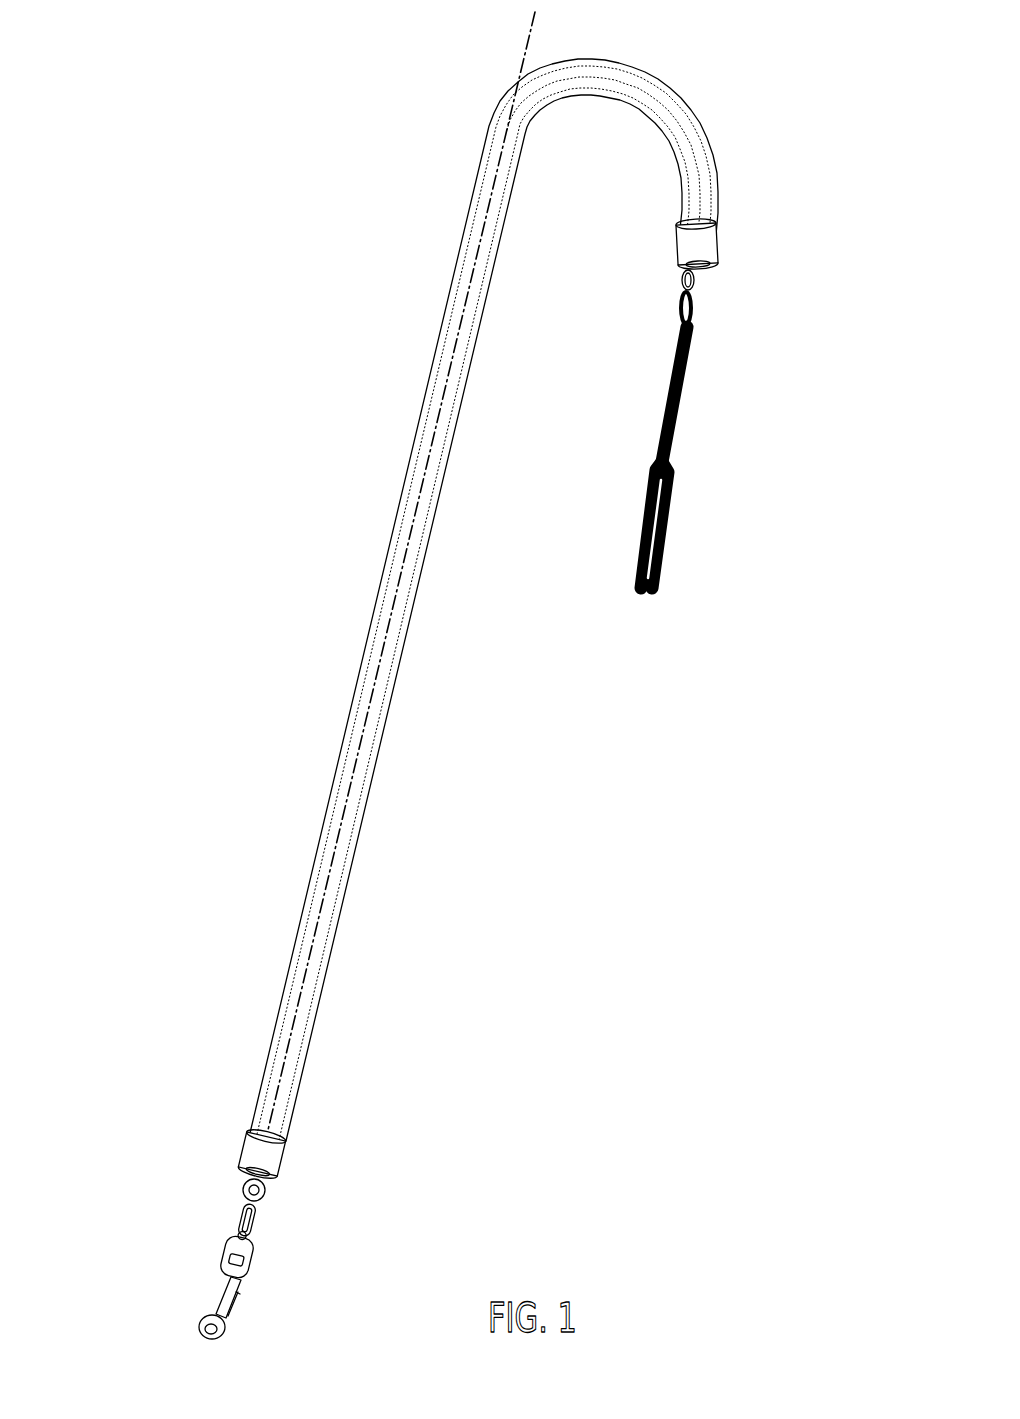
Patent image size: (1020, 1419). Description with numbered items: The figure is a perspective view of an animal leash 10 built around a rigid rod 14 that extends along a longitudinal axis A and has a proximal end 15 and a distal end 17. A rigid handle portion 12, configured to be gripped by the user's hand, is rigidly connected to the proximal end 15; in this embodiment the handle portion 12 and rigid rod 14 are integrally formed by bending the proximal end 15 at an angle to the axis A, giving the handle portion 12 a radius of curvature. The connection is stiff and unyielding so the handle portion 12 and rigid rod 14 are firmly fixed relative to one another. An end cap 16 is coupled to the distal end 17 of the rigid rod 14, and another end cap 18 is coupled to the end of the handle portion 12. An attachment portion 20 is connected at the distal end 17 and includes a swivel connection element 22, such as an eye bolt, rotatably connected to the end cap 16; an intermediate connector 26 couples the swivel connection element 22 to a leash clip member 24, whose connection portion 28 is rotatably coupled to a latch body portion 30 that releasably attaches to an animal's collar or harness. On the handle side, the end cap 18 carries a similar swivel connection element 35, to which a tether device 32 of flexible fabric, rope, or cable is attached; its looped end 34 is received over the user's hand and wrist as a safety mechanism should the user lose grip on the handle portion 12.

The animal leash 10 is at (259, 376).
The handle portion 12 is at (683, 77).
The rigid rod 14 is at (366, 659).
The proximal end 15 is at (482, 137).
The end cap 16 is at (277, 1152).
The distal end 17 is at (254, 1120).
The end cap 18 is at (718, 240).
The attachment portion 20 is at (168, 1242).
The swivel connection element 22 is at (264, 1190).
The leash clip member 24 is at (280, 1310).
The intermediate connector 26 is at (253, 1222).
The connection portion 28 is at (253, 1258).
The latch body portion 30 is at (213, 1318).
The tether device 32 is at (694, 407).
The looped end 34 is at (661, 529).
The swivel connection element 35 is at (684, 274).
The longitudinal axis A is at (523, 48).